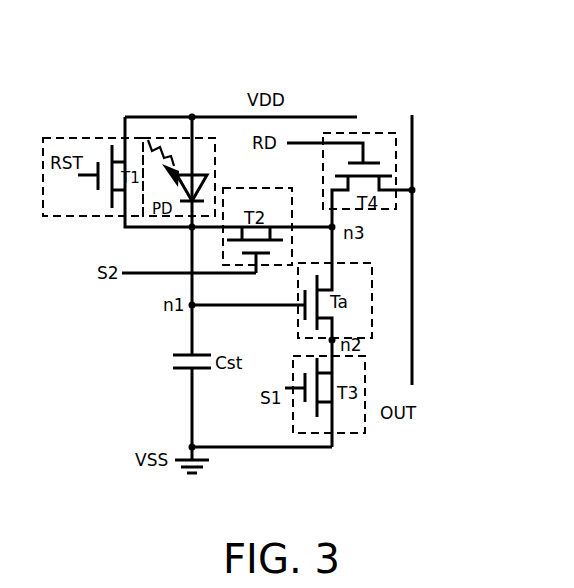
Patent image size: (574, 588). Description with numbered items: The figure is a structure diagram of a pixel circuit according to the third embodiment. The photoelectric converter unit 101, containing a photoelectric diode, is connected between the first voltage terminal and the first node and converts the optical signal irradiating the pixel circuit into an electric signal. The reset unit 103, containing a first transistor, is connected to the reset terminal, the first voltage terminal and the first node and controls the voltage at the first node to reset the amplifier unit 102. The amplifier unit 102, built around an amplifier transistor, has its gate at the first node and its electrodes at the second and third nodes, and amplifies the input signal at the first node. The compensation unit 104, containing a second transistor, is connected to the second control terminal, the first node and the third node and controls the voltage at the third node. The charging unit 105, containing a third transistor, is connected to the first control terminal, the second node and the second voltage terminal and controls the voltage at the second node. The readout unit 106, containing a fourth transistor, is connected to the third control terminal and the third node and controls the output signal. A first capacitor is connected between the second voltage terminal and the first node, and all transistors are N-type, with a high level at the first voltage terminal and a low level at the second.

The photoelectric converter unit 101 is at (174, 150).
The amplifier unit 102 is at (355, 293).
The reset unit 103 is at (62, 143).
The compensation unit 104 is at (233, 253).
The charging unit 105 is at (348, 370).
The readout unit 106 is at (383, 149).